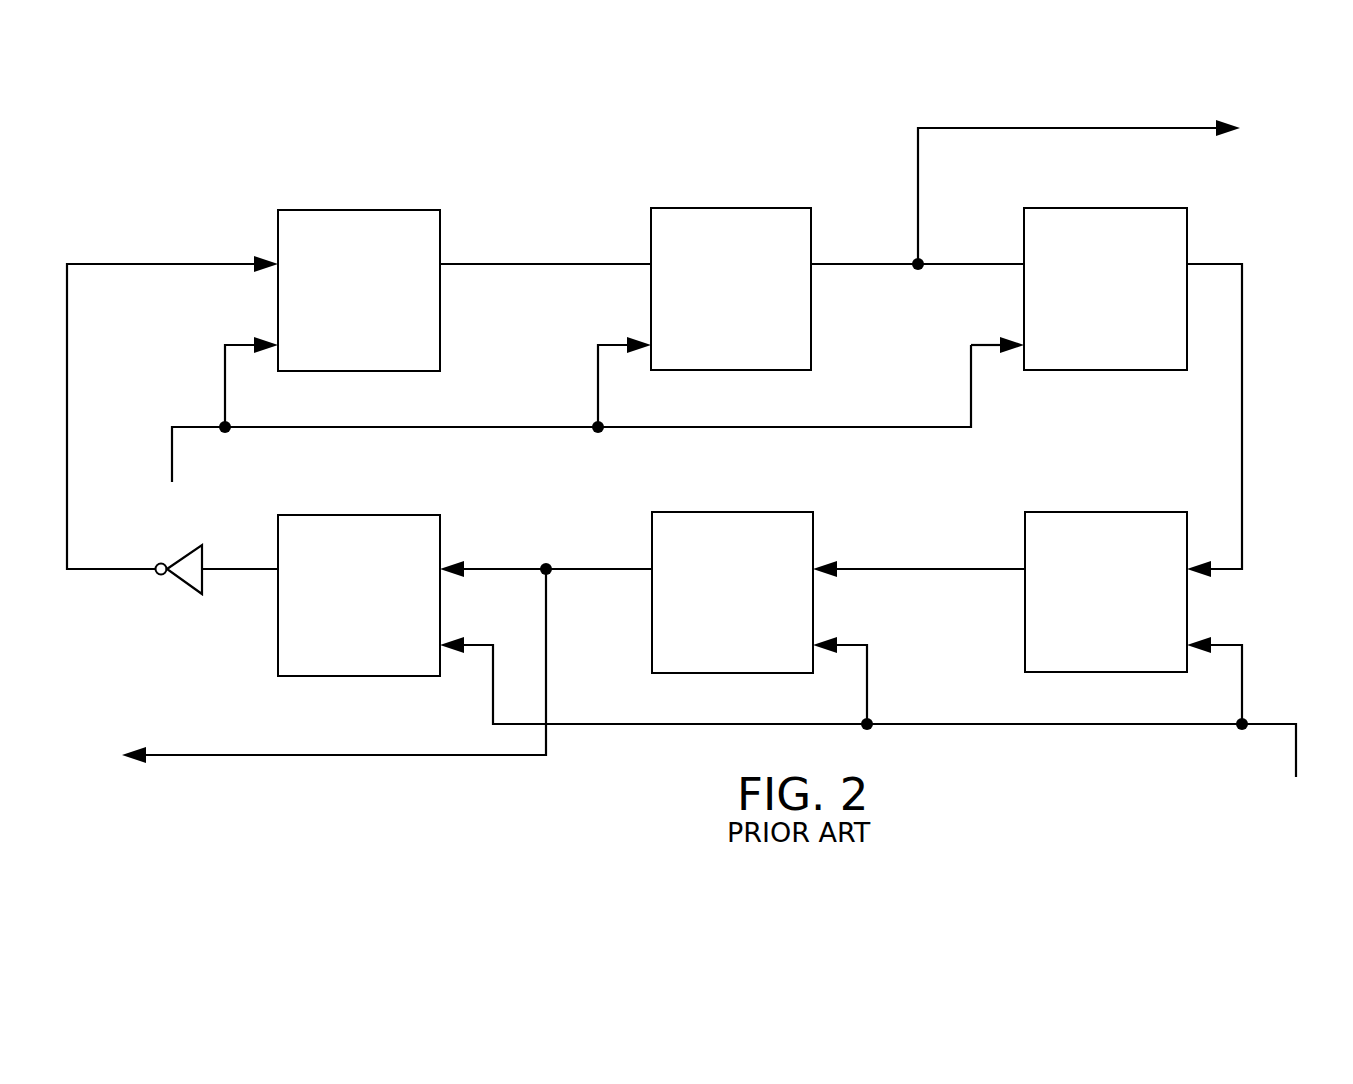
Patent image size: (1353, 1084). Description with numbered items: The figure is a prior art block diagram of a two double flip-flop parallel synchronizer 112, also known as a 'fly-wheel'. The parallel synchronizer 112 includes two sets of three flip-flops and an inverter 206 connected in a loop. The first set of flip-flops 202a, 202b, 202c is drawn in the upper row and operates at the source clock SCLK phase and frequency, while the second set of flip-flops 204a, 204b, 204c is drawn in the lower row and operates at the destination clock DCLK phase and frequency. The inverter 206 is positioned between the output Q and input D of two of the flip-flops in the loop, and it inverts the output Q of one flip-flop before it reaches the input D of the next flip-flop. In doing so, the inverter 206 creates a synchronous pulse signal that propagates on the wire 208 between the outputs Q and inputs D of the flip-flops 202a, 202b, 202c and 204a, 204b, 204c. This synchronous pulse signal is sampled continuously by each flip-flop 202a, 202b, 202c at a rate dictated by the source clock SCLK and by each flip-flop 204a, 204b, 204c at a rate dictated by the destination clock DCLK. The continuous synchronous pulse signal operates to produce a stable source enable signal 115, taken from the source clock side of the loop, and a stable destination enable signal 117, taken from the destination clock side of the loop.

The parallel synchronizer 112 is at (990, 762).
The source enable signal 115 is at (975, 128).
The destination enable signal 117 is at (287, 755).
The flip-flop 202a is at (345, 210).
The flip-flop 202b is at (720, 208).
The flip-flop 202c is at (1190, 236).
The flip-flop 204a is at (390, 515).
The flip-flop 204b is at (745, 512).
The flip-flop 204c is at (1115, 512).
The inverter 206 is at (180, 586).
The wire 208 is at (150, 264).